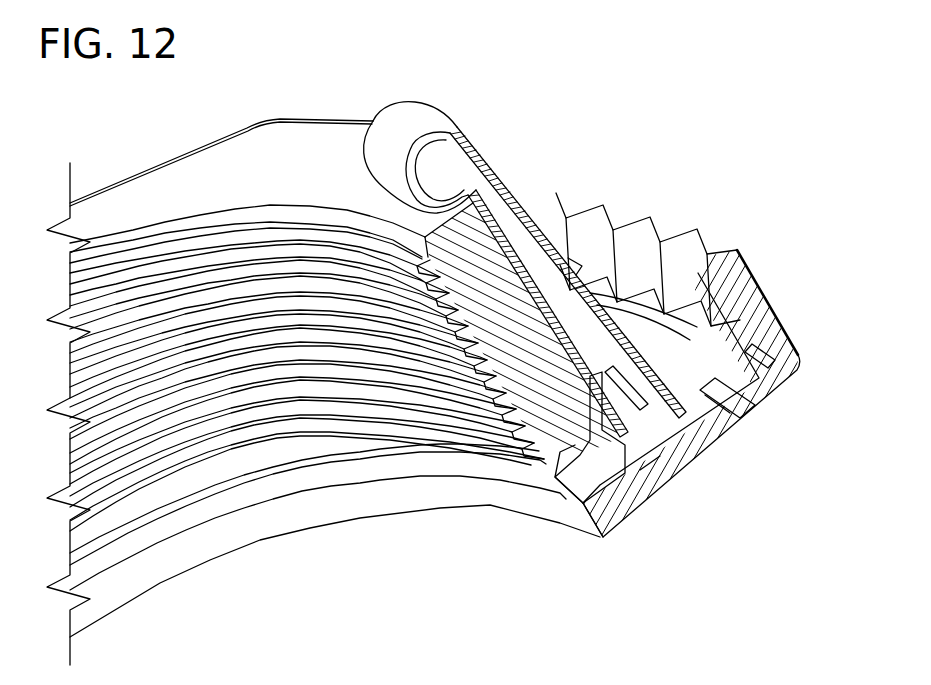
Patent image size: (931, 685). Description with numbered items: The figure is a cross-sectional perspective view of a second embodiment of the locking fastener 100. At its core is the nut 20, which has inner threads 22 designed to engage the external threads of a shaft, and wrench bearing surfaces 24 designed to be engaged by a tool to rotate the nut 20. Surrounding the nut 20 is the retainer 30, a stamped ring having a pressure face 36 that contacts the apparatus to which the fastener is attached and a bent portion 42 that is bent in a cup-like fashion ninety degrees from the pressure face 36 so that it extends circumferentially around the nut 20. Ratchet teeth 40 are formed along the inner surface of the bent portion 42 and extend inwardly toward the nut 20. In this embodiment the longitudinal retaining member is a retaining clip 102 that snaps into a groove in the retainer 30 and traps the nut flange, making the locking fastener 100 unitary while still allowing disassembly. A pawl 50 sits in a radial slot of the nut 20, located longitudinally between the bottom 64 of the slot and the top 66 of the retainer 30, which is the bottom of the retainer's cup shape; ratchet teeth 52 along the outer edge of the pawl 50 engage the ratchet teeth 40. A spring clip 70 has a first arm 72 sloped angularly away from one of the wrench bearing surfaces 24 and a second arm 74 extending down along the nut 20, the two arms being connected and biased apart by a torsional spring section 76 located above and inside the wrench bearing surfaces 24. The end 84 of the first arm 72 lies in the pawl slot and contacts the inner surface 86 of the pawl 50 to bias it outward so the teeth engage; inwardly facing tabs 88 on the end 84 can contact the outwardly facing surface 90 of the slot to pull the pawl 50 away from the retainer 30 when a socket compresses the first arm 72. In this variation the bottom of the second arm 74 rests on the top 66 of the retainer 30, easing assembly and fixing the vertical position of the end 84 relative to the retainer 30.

The locking fastener 100 is at (316, 76).
The nut 20 is at (258, 128).
The inner threads 22 is at (138, 297).
The wrench bearing surfaces 24 is at (170, 163).
The retainer 30 is at (572, 273).
The pressure face 36 is at (630, 528).
The ratchet teeth 40 is at (703, 287).
The bent portion 42 is at (760, 297).
The pawl 50 is at (727, 420).
The ratchet teeth 52 is at (747, 360).
The bottom of the slots 64 is at (647, 313).
The top of the retainer 66 is at (645, 480).
The spring clip 70 is at (467, 137).
The first arm 72 is at (575, 262).
The second arm 74 is at (545, 310).
The torsional spring section 76 is at (397, 121).
The end of the first arm 84 is at (705, 435).
The inner surface 86 is at (697, 398).
The tabs 88 is at (600, 400).
The outwardly facing surface 90 is at (637, 405).
The retaining clip 102 is at (625, 292).